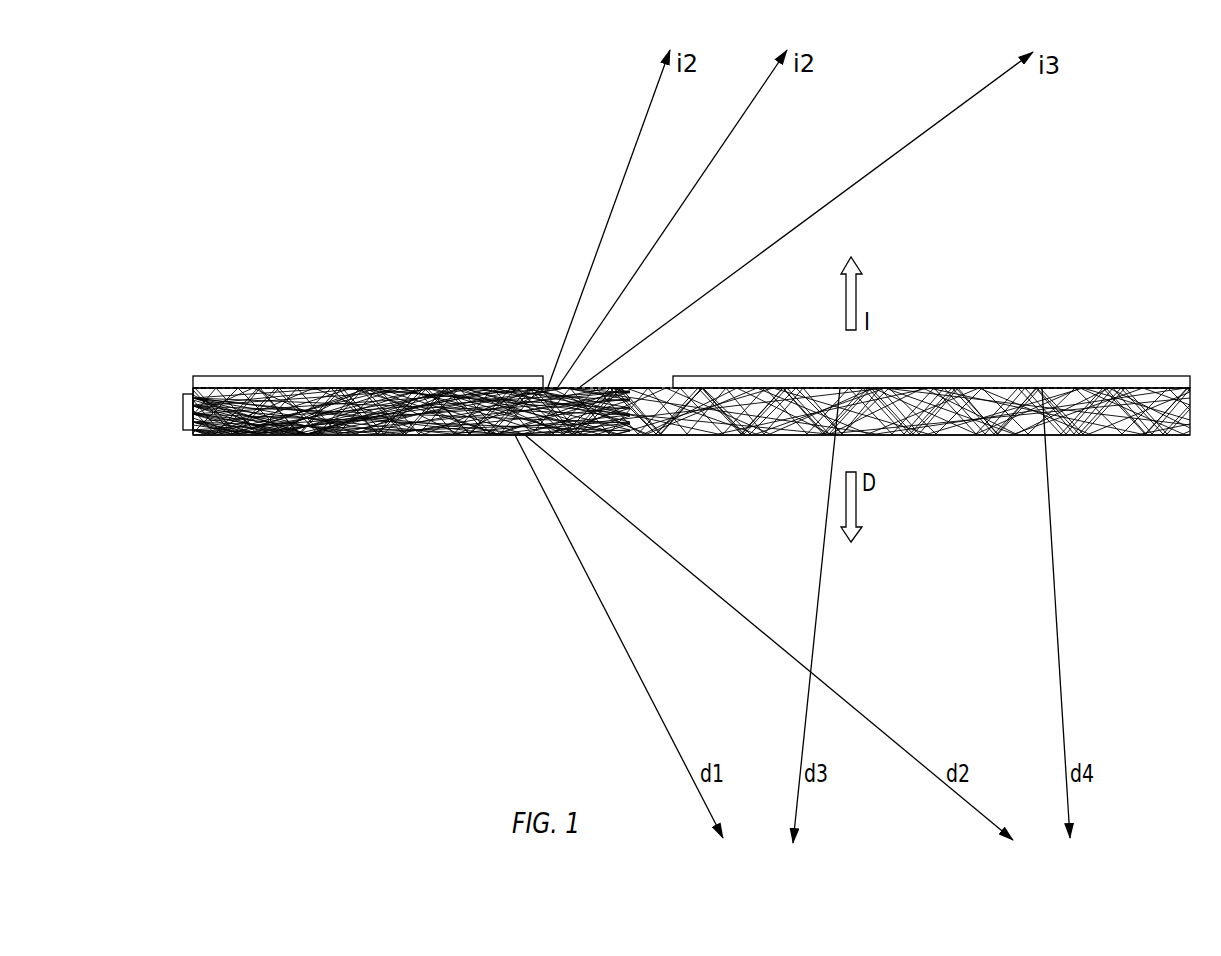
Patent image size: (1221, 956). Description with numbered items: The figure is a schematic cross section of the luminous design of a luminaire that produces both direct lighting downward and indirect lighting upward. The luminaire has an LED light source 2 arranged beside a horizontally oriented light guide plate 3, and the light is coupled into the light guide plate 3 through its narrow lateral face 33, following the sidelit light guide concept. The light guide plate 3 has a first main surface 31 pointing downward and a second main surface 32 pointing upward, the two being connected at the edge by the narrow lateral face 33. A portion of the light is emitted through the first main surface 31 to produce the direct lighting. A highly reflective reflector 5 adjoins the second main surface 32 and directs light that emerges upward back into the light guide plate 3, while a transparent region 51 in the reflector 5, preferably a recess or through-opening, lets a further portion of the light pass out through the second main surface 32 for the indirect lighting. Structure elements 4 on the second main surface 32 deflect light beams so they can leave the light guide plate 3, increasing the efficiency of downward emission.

The LED light source 2 is at (183, 418).
The light guide plate 3 is at (320, 388).
The structure elements 4 is at (543, 388).
The reflector 5 is at (265, 376).
The first main surface 31 is at (446, 440).
The second main surface 32 is at (447, 388).
The narrow lateral face 33 is at (185, 399).
The transparent region 51 is at (667, 378).